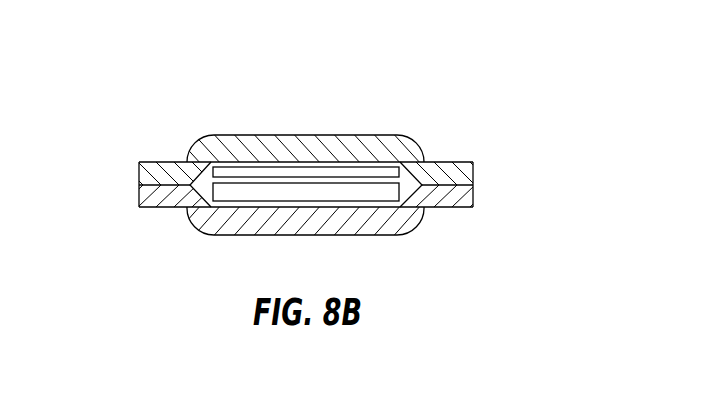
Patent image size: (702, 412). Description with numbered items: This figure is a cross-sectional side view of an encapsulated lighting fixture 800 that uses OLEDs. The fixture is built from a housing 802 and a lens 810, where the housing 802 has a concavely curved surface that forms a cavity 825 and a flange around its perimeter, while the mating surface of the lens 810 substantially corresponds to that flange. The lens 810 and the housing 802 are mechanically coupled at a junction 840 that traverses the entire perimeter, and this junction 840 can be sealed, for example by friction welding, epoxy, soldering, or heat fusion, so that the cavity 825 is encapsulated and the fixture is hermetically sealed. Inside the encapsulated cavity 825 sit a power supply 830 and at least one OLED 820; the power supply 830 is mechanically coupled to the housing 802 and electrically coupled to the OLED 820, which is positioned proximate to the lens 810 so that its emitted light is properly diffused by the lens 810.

The encapsulated lighting fixture 800 is at (160, 72).
The housing 802 is at (470, 197).
The lens 810 is at (470, 173).
The OLED 820 is at (307, 171).
The cavity 825 is at (204, 174).
The power supply 830 is at (307, 192).
The junction 840 is at (155, 187).